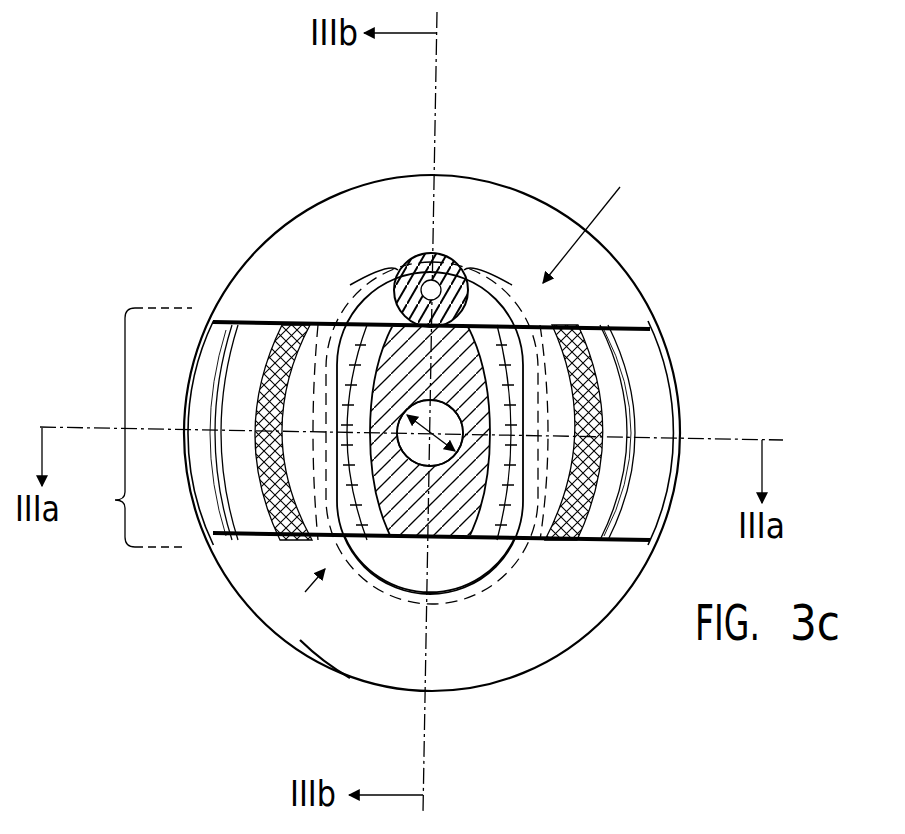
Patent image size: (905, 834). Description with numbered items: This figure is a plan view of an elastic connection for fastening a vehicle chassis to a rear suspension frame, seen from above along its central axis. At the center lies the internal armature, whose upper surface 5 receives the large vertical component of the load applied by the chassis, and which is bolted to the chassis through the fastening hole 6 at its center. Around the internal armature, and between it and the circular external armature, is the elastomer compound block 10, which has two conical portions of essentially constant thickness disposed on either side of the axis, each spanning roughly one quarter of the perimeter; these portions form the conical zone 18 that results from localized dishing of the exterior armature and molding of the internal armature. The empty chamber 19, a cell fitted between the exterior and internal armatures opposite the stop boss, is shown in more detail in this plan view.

The upper surface 5 is at (480, 511).
The fastening hole 6 is at (412, 545).
The elastomer compound block 10 is at (232, 500).
The conical zone 18 is at (366, 427).
The empty chamber 19 is at (395, 560).